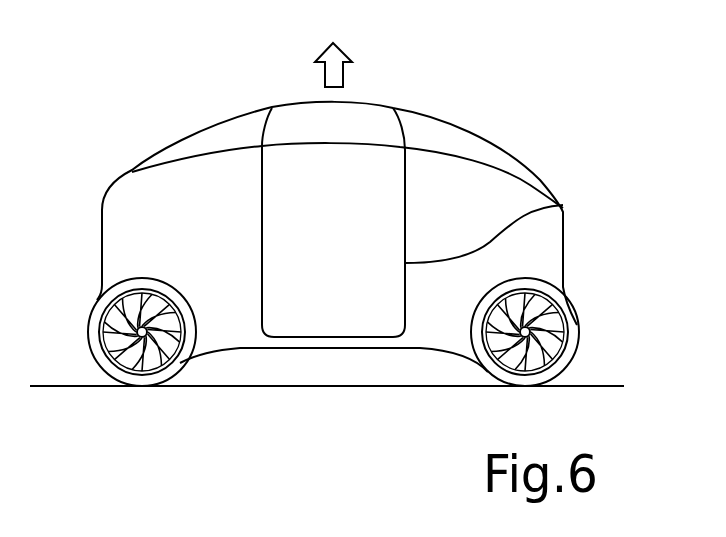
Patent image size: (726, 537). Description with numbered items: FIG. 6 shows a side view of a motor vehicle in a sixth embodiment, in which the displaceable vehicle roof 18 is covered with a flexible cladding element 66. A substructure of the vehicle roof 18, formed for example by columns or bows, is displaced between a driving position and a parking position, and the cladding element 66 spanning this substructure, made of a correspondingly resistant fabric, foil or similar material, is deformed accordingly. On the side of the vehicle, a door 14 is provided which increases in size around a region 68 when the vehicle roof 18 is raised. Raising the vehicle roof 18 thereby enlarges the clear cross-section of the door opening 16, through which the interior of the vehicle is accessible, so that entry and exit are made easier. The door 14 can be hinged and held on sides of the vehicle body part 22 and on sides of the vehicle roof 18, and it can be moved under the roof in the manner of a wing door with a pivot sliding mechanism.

The door 14 is at (339, 323).
The door opening 16 is at (563, 205).
The vehicle roof 18 is at (525, 125).
The vehicle body part 22 is at (597, 300).
The flexible cladding element 66 is at (457, 120).
The region 68 is at (365, 120).